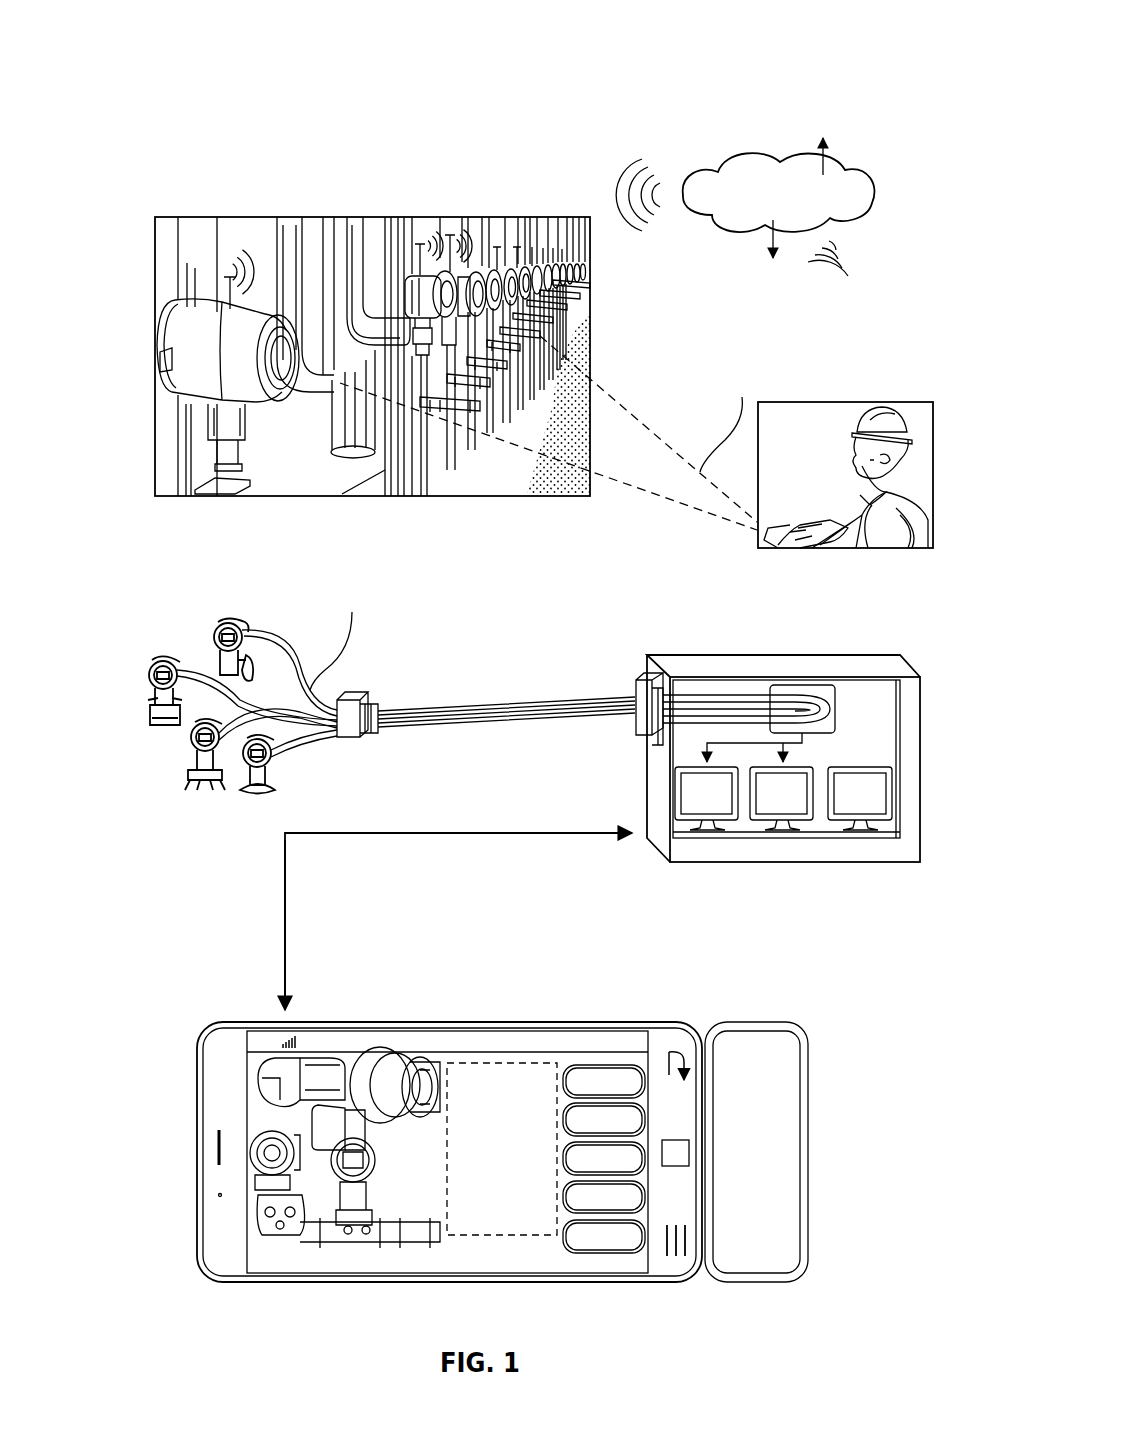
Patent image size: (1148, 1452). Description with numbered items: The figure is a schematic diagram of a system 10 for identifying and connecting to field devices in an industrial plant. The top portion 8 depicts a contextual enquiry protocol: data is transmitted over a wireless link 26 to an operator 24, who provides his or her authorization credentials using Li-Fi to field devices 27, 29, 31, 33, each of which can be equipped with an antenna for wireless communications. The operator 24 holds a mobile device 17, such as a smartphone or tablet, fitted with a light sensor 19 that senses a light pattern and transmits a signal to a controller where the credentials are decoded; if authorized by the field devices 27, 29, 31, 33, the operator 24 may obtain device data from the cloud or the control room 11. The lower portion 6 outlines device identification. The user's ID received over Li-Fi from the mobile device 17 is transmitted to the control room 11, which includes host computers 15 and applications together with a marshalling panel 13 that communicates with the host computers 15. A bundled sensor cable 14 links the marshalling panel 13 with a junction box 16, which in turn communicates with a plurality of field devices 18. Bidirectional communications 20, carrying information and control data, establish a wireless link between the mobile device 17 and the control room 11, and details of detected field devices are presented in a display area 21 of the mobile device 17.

The system 10 is at (200, 28).
The top portion 8 is at (112, 217).
The field device 27 is at (172, 316).
The field device 29 is at (448, 262).
The field device 31 is at (460, 262).
The field device 33 is at (500, 280).
The wireless link 26 is at (888, 188).
The operator 24 is at (886, 388).
The light sensor 19 is at (762, 546).
The mobile device 17 is at (800, 562).
The lower portion 6 is at (130, 583).
The field devices 18 is at (180, 742).
The bundled sensor cable 14 is at (442, 723).
The marshalling panel 13 is at (630, 692).
The control room 11 is at (840, 668).
The host computers 15 is at (913, 870).
The junction box 16 is at (320, 793).
The bidirectional communications 20 is at (615, 838).
The display area 21 is at (255, 1175).